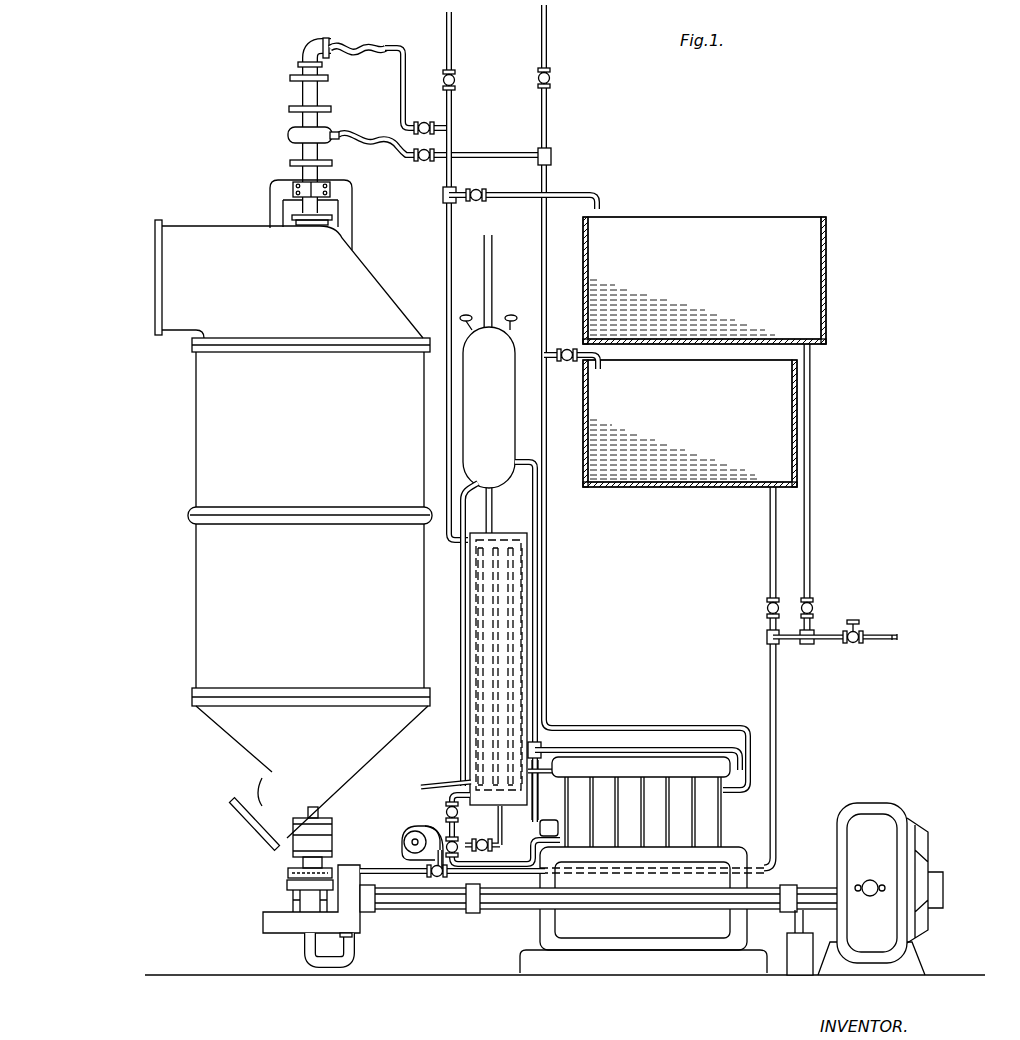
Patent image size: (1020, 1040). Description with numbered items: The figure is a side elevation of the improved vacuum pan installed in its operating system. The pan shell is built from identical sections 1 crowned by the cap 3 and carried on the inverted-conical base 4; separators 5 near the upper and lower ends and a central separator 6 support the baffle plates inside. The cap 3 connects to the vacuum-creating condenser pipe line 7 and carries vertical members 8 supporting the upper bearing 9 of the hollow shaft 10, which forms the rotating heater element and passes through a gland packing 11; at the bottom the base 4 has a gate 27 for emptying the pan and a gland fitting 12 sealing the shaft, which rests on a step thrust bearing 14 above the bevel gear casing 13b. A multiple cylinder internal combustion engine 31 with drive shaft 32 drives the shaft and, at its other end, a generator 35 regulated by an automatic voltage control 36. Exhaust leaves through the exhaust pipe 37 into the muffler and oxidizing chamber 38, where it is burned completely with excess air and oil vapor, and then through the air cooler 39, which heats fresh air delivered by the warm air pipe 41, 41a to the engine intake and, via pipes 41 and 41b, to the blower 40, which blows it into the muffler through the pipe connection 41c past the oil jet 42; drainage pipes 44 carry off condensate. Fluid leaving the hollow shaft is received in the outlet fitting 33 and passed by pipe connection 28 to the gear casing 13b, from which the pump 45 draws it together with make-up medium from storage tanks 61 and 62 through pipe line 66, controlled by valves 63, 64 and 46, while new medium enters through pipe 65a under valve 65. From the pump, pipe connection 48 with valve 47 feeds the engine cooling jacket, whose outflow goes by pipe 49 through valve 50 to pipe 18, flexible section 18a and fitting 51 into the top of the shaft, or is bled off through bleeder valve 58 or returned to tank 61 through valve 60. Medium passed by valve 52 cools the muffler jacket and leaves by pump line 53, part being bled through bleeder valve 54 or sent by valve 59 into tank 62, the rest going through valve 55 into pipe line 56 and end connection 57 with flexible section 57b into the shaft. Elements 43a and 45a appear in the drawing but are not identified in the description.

The sections 1 is at (196, 438).
The cap 3 is at (378, 296).
The base 4 is at (345, 768).
The separators 5 is at (192, 346).
The separator 6 is at (190, 515).
The vacuum creating condenser pipe line 7 is at (156, 278).
The vertical members 8 is at (354, 228).
The upper bearing 9 is at (332, 189).
The shaft 10 is at (292, 155).
The gland packing 11 is at (334, 220).
The gland fitting 12 is at (300, 838).
The bevel gear casing 13b is at (350, 868).
The step thrust bearing 14 is at (288, 872).
The pipe nipple 18 is at (330, 120).
The flexible pipe section 18a is at (360, 137).
The gate 27 is at (241, 822).
The pipe connection 28 is at (352, 950).
The multiple cylinder internal combustion engine 31 is at (618, 930).
The drive shaft 32 is at (505, 910).
The outlet fitting 33 is at (302, 940).
The generator 35 is at (880, 806).
The automatic voltage control 36 is at (800, 960).
The exhaust pipe 37 is at (548, 760).
The muffler and oxidizing chamber 38 is at (531, 676).
The air cooler 39 is at (488, 384).
The blower 40 is at (557, 866).
The warm air pipe 41 is at (538, 508).
The warm air pipe 41a is at (640, 748).
The pipe 41b is at (545, 785).
The pipe connection 41c is at (629, 769).
The oil jet 42 is at (495, 824).
The pipe 43a is at (460, 796).
The drainage pipes 44 is at (457, 781).
The pump 45 is at (405, 837).
The pipe 45a is at (395, 868).
The valve 46 is at (437, 880).
The valve 47 is at (437, 858).
The pipe connection 48 is at (471, 914).
The pipe 49 is at (549, 33).
The valve 50 is at (424, 162).
The fitting 51 is at (302, 90).
The valve 52 is at (444, 811).
The pump line 53 is at (446, 463).
The bleeder valve 54 is at (456, 80).
The valve 55 is at (425, 122).
The pipe line 56 is at (399, 46).
The end connection 57 is at (328, 42).
The flexible pipe section 57b is at (362, 44).
The bleeder valve 58 is at (551, 77).
The valve 59 is at (477, 191).
The valve 60 is at (567, 349).
The storage tank 61 is at (700, 478).
The storage tank 62 is at (730, 215).
The valve 63 is at (762, 607).
The valve 64 is at (820, 608).
The valve 65 is at (853, 646).
The pipe 65a is at (896, 643).
The pipe line 66 is at (781, 737).